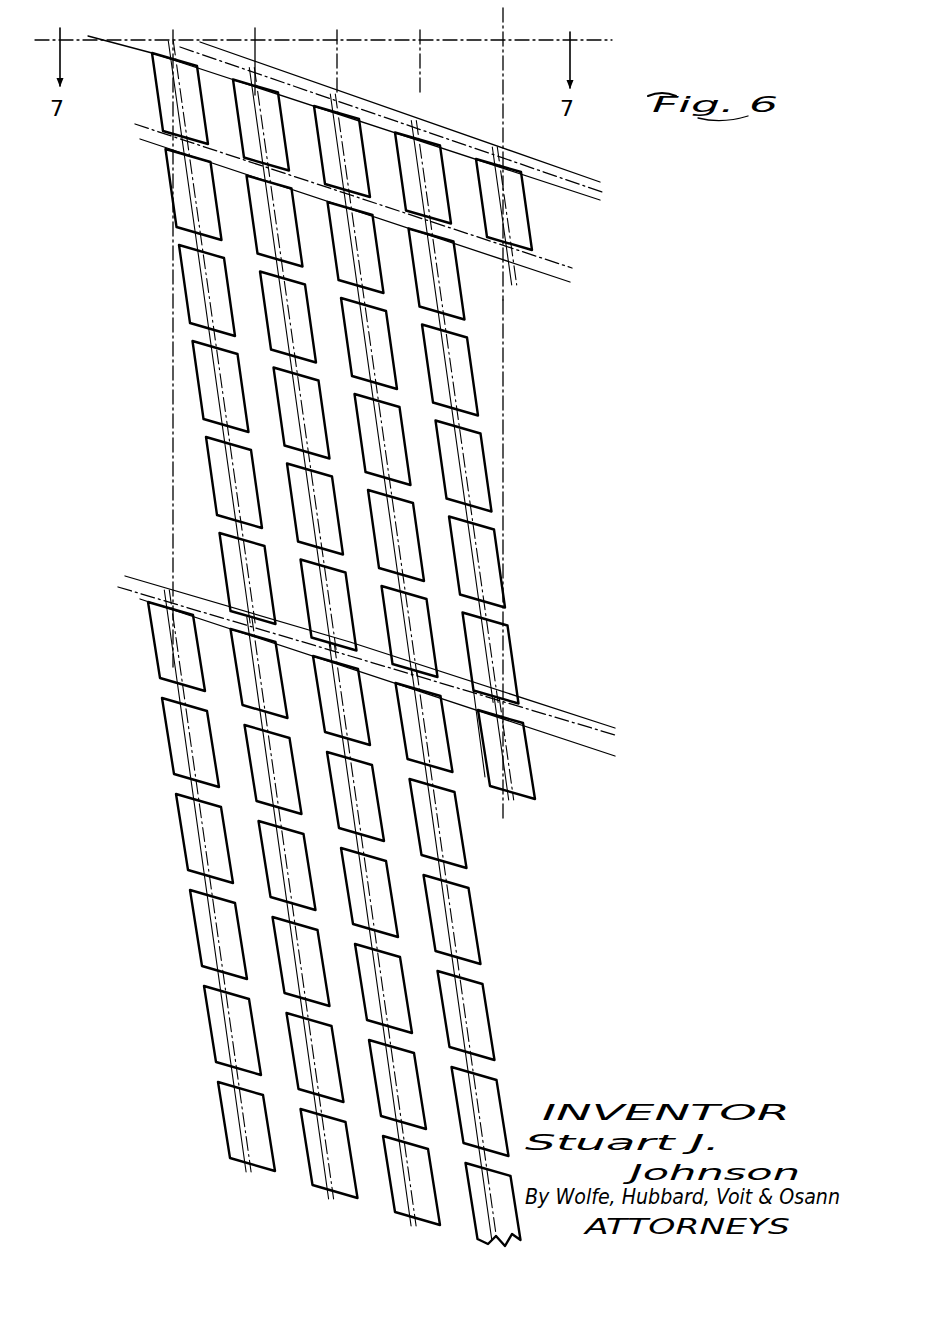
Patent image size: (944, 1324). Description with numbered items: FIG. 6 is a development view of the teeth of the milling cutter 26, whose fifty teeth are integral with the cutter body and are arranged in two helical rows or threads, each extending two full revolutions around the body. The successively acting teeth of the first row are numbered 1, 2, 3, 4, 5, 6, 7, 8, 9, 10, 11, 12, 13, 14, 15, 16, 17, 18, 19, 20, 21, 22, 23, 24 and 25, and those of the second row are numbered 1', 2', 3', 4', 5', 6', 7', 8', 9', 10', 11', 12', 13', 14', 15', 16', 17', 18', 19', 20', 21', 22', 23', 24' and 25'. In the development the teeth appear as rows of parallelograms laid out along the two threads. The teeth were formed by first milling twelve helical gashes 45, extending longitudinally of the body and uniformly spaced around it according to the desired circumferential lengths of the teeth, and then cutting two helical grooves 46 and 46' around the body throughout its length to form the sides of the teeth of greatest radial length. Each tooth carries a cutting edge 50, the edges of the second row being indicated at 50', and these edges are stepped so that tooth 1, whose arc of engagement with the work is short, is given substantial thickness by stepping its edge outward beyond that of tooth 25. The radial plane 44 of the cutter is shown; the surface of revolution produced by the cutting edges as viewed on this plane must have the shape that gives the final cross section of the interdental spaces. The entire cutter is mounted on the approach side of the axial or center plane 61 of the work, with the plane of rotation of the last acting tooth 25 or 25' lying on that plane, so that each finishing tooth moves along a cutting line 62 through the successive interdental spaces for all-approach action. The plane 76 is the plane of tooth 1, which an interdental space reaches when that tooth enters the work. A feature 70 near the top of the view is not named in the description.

The cutter tooth 1 is at (162, 98).
The cutter tooth 2 is at (170, 194).
The cutter tooth 3 is at (187, 290).
The cutter tooth 4 is at (195, 386).
The cutter tooth 5 is at (219, 482).
The cutter tooth 6 is at (232, 578).
The cutter tooth 7' is at (251, 125).
The cutter tooth 8' is at (262, 221).
The cutter tooth 9' is at (275, 317).
The cutter tooth 10' is at (288, 413).
The cutter tooth 11' is at (302, 509).
The cutter tooth 12' is at (314, 605).
The cutter tooth 13 is at (330, 151).
The cutter tooth 14 is at (342, 247).
The cutter tooth 15 is at (357, 343).
The cutter tooth 16 is at (370, 439).
The cutter tooth 17 is at (385, 535).
The cutter tooth 18 is at (395, 631).
The cutter tooth 19 is at (437, 178).
The cutter tooth 20' is at (454, 274).
The cutter tooth 21' is at (463, 367).
The cutter tooth 22' is at (494, 466).
The cutter tooth 23' is at (502, 562).
The cutter tooth 24' is at (520, 658).
The finishing cutter tooth 25 is at (533, 204).
The cutter tooth 1' is at (158, 646).
The cutter tooth 2' is at (170, 742).
The cutter tooth 3' is at (185, 838).
The cutter tooth 4' is at (199, 934).
The cutter tooth 5' is at (213, 1030).
The cutter tooth 6' is at (227, 1126).
The cutter tooth 7 is at (249, 673).
The cutter tooth 8 is at (263, 769).
The cutter tooth 9 is at (278, 865).
The cutter tooth 10 is at (285, 961).
The cutter tooth 11 is at (302, 1057).
The cutter tooth 12 is at (316, 1153).
The cutter tooth 13' is at (329, 700).
The cutter tooth 14' is at (342, 796).
The cutter tooth 15' is at (358, 892).
The cutter tooth 16' is at (371, 988).
The cutter tooth 17' is at (390, 1084).
The cutter tooth 18' is at (397, 1180).
The cutter tooth 19' is at (412, 727).
The cutter tooth 20 is at (427, 823).
The cutter tooth 21 is at (439, 919).
The cutter tooth 22 is at (454, 1015).
The cutter tooth 23 is at (467, 1111).
The cutter tooth 24 is at (478, 1204).
The finishing cutter tooth 25' is at (537, 754).
The radial plane 44 is at (352, 40).
The helical gashes 45 is at (547, 172).
The milling cutter 26 is at (581, 265).
The helical grooves 46 is at (290, 913).
The column line 46' is at (483, 767).
The cutting edge 50 is at (373, 103).
The strip edge 50' is at (367, 95).
The center plane 61 is at (507, 14).
The cutting line 62 is at (506, 392).
The strip edge line 70 is at (133, 64).
The plane of tooth 1 76 is at (172, 320).